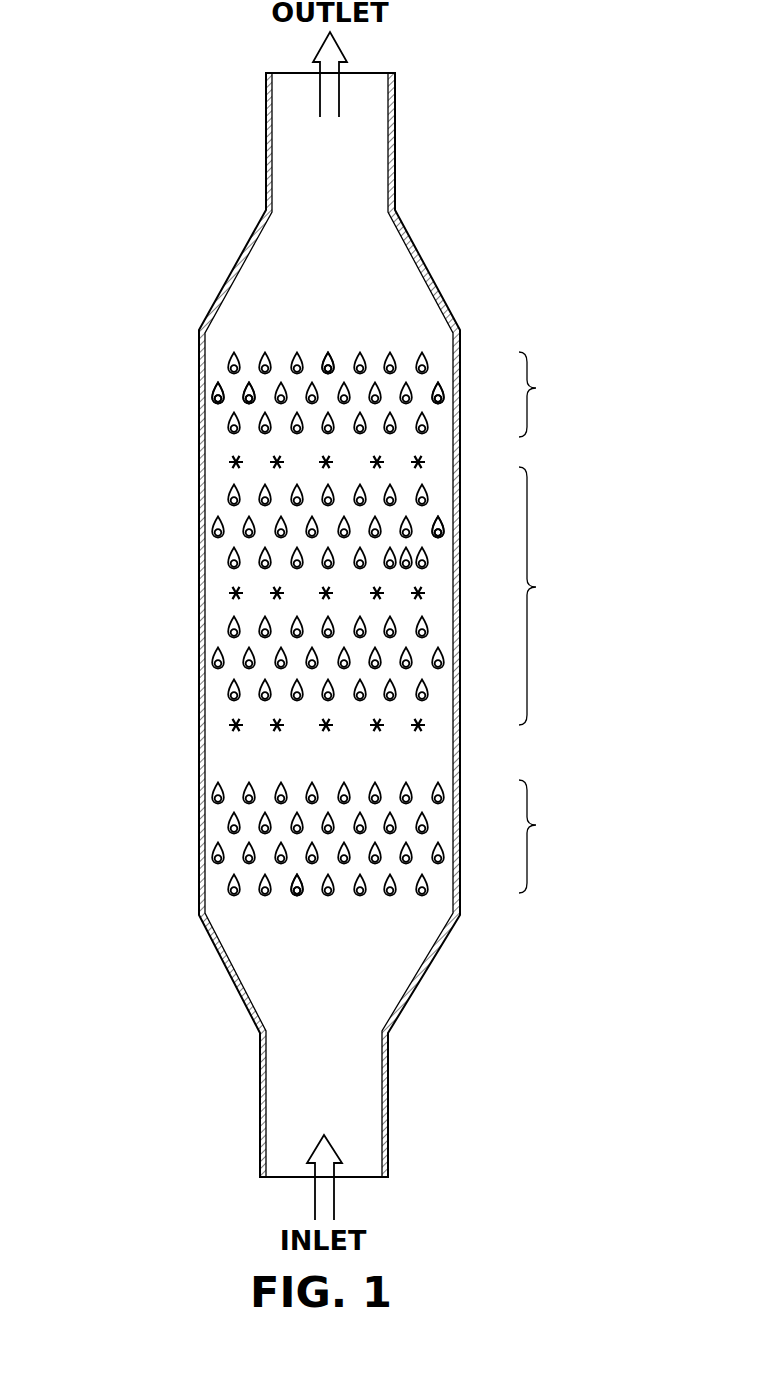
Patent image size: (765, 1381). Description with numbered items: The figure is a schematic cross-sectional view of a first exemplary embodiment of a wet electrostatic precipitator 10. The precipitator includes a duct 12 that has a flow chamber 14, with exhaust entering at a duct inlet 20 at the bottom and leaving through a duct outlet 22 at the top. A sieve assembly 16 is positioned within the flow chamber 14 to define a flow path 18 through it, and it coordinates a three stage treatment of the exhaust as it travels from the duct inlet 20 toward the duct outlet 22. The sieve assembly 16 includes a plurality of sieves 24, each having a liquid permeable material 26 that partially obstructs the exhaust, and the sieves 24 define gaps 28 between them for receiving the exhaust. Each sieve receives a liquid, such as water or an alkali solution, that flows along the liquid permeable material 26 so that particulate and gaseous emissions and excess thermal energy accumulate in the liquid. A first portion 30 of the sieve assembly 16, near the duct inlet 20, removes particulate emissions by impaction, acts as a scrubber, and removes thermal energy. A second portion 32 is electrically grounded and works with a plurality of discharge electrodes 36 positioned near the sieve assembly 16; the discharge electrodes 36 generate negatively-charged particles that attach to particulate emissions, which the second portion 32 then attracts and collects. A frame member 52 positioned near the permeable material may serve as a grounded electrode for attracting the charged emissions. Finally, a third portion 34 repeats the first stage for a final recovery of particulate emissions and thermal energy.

The wet electrostatic precipitator 10 is at (88, 144).
The duct 12 is at (436, 283).
The flow chamber 14 is at (325, 990).
The sieve assembly 16 is at (278, 328).
The flow path 18 is at (340, 106).
The duct inlet 20 is at (287, 1180).
The duct outlet 22 is at (380, 73).
The sieves 24 is at (365, 358).
The liquid permeable material 26 is at (325, 355).
The gaps 28 is at (248, 364).
The first portion 30 is at (543, 836).
The second portion 32 is at (543, 596).
The third portion 34 is at (543, 393).
The discharge electrodes 36 is at (425, 459).
The frame member 52 is at (215, 403).